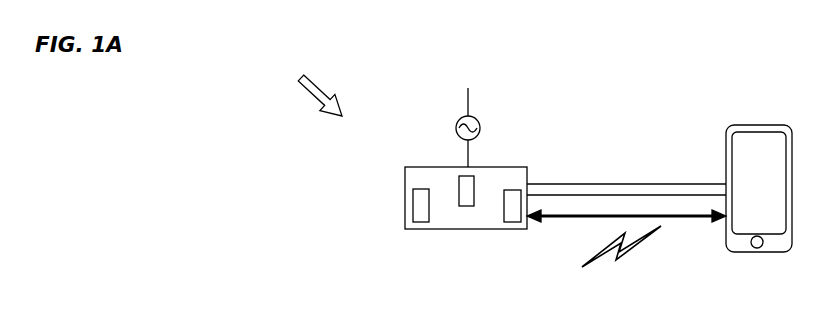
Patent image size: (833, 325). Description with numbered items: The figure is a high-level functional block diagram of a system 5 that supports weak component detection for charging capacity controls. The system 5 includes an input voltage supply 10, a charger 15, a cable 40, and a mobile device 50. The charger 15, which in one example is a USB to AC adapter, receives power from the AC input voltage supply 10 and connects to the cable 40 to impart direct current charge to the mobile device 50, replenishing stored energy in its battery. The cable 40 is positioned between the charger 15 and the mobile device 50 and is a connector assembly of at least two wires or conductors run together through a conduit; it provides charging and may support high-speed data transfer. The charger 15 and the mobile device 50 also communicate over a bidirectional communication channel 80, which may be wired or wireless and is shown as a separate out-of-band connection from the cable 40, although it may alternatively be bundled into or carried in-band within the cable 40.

The system 5 is at (315, 89).
The input voltage supply 10 is at (452, 98).
The charger 15 is at (467, 163).
The cable 40 is at (613, 166).
The mobile device 50 is at (758, 125).
The bidirectional communication channel 80 is at (559, 232).